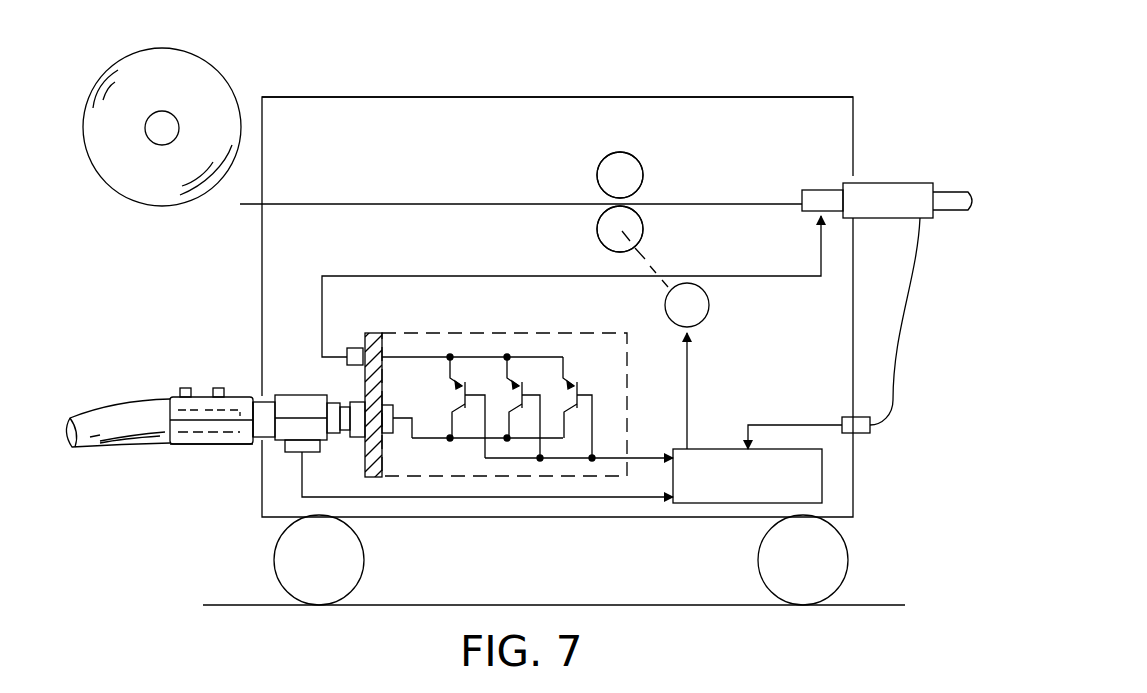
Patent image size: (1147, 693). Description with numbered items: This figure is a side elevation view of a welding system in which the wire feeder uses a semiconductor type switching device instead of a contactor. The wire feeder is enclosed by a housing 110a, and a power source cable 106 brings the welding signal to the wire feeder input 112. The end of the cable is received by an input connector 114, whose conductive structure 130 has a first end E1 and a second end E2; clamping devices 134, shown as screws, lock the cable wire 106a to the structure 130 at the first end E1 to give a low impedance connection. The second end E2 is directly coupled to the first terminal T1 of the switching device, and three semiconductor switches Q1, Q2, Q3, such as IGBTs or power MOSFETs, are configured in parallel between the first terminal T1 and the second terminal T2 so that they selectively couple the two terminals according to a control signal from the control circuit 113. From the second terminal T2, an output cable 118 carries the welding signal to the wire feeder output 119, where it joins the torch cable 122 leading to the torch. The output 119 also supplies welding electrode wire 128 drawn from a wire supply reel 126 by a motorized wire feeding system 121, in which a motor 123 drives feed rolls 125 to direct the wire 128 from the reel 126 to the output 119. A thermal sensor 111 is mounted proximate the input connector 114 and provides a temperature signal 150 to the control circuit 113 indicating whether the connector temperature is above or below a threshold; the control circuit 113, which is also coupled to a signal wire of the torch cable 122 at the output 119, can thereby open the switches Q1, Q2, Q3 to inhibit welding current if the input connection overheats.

The power source cable 106 is at (603, 93).
The cable wire 106a is at (167, 460).
The wire feeder housing 110a is at (427, 97).
The thermal sensor 111 is at (300, 453).
The wire feeder input 112 is at (276, 315).
The control circuit 113 is at (731, 505).
The input connector 114 is at (219, 448).
The output cable 118 is at (494, 275).
The wire feeder output 119 is at (883, 182).
The motorized wire feeding system 121 is at (666, 180).
The torch cable 122 is at (955, 191).
The motor 123 is at (711, 305).
The feed rolls 125 is at (605, 222).
The wire supply reel 126 is at (197, 53).
The welding electrode wire 128 is at (230, 206).
The conductive structure 130 is at (198, 447).
The clamping devices 134 is at (216, 388).
The temperature signal 150 is at (640, 500).
The first terminal T1 is at (387, 430).
The second terminal T2 is at (351, 348).
The semiconductor switch Q1 is at (456, 398).
The semiconductor switch Q2 is at (505, 392).
The semiconductor switch Q3 is at (560, 392).
The first end E1 is at (170, 395).
The second end E2 is at (287, 393).